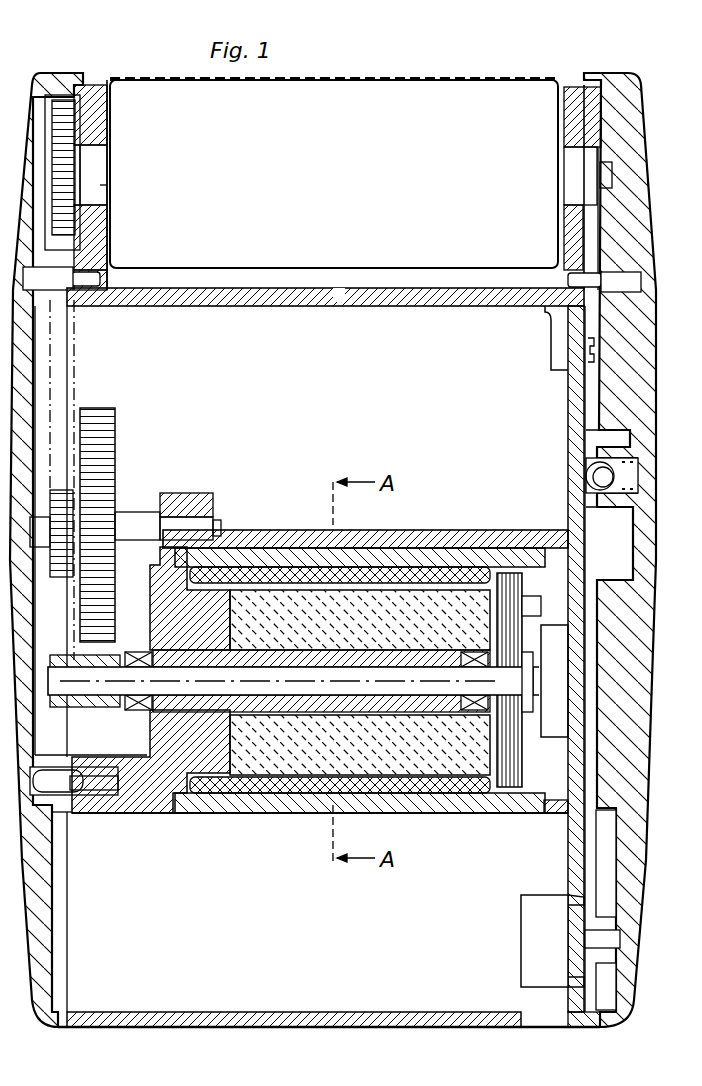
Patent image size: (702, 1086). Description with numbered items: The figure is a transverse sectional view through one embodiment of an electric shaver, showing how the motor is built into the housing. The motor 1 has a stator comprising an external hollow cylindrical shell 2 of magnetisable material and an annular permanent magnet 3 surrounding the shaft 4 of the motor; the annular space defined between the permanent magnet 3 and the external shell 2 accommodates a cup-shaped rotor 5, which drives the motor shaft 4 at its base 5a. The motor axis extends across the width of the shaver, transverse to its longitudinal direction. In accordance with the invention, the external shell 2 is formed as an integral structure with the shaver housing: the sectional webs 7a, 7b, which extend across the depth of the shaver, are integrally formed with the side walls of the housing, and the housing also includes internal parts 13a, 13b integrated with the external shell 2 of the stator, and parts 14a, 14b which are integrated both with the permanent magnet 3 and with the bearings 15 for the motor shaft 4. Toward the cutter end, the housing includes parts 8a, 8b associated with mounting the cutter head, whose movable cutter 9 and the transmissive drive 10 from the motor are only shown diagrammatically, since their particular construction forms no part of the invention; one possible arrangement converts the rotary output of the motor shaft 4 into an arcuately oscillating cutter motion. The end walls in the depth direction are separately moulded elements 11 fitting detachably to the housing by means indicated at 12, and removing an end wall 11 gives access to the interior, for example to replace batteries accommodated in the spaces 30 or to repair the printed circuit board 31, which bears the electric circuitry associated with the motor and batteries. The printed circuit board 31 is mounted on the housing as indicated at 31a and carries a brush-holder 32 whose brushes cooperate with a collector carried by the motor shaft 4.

The motor 1 is at (535, 613).
The external hollow cylindrical shell 2 is at (430, 557).
The annular permanent magnet 3 is at (472, 605).
The shaft 4 is at (364, 690).
The cup-shaped rotor 5 is at (461, 578).
The base 5a is at (528, 584).
The sectional web 7a is at (249, 306).
The sectional web 7b is at (262, 1010).
The housing part 8a is at (107, 95).
The housing part 8b is at (564, 95).
The movable cutter 9 is at (320, 100).
The transmissive drive 10 is at (110, 424).
The end wall 11 is at (22, 641).
The fitting means 12 is at (614, 280).
The internal housing part 13a is at (258, 530).
The internal housing part 13b is at (552, 815).
The housing part 14a is at (140, 717).
The housing part 14b is at (270, 708).
The bearings 15 is at (138, 650).
The spaces 30 is at (356, 403).
The printed circuit board 31 is at (568, 388).
The mounting 31a is at (553, 333).
The brush-holder 32 is at (556, 718).